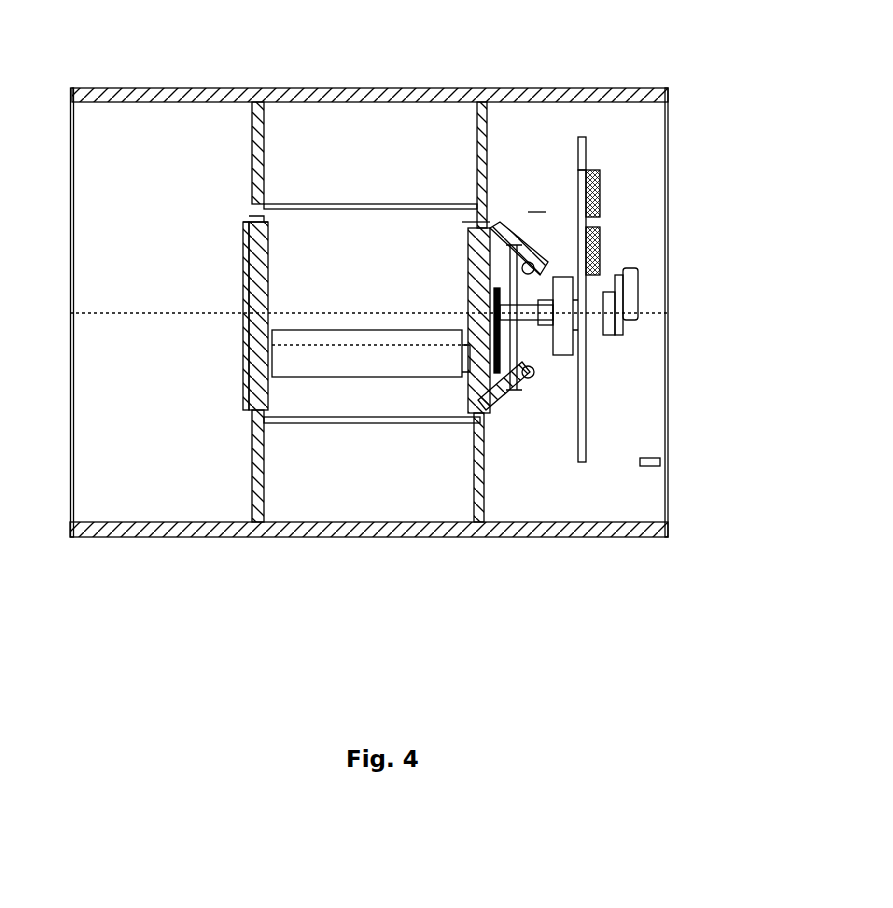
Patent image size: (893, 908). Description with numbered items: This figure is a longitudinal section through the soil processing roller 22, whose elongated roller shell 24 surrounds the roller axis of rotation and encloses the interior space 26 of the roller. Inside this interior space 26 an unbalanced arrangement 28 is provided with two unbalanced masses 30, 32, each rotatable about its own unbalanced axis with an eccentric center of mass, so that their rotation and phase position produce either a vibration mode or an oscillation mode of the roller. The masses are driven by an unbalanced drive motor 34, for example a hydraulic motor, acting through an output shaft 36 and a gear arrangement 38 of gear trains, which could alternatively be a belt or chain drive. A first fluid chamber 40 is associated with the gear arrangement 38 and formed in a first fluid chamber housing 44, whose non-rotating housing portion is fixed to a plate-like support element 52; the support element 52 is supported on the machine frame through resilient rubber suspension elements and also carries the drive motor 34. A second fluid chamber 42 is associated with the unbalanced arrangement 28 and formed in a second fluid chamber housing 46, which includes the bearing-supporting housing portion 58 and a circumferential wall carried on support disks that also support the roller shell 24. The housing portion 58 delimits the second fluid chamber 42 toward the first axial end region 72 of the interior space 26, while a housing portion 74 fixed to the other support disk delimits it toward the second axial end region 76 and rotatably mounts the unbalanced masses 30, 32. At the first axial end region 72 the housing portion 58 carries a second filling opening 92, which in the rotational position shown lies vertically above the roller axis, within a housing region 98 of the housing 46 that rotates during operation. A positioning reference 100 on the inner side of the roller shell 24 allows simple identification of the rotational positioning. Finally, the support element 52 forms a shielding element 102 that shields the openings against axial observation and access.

The soil processing roller 22 is at (98, 58).
The roller shell 24 is at (146, 88).
The interior space of the roller 26 is at (338, 516).
The unbalanced arrangement 28 is at (248, 264).
The unbalanced mass 30 is at (467, 438).
The unbalanced mass 32 is at (240, 331).
The unbalanced drive motor 34 is at (627, 330).
The output shaft 36 is at (603, 265).
The gear arrangement 38 is at (560, 385).
The first fluid chamber 40 is at (593, 358).
The second fluid chamber 42 is at (285, 406).
The first fluid chamber housing 44 is at (492, 232).
The second fluid chamber housing 46 is at (297, 476).
The plate-like support element 52 is at (583, 428).
The housing portion 58 is at (487, 222).
The first axial end region 72 is at (630, 502).
The housing portion 74 is at (252, 214).
The second axial end region 76 is at (112, 495).
The second filling opening 92 is at (541, 202).
The housing region 98 is at (464, 211).
The positioning reference 100 is at (665, 462).
The shielding element 102 is at (580, 137).